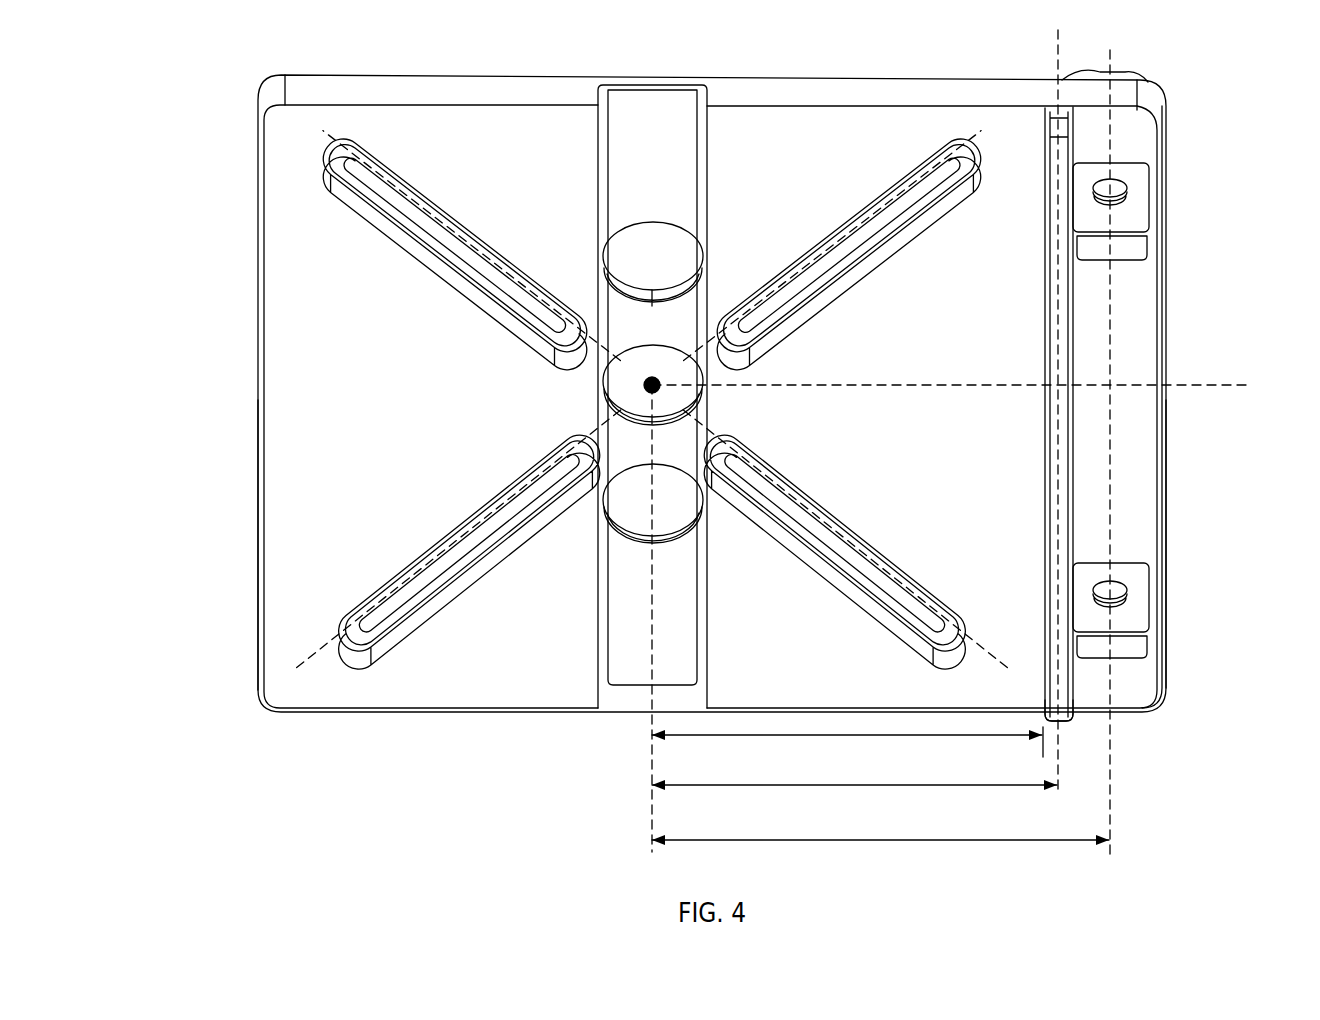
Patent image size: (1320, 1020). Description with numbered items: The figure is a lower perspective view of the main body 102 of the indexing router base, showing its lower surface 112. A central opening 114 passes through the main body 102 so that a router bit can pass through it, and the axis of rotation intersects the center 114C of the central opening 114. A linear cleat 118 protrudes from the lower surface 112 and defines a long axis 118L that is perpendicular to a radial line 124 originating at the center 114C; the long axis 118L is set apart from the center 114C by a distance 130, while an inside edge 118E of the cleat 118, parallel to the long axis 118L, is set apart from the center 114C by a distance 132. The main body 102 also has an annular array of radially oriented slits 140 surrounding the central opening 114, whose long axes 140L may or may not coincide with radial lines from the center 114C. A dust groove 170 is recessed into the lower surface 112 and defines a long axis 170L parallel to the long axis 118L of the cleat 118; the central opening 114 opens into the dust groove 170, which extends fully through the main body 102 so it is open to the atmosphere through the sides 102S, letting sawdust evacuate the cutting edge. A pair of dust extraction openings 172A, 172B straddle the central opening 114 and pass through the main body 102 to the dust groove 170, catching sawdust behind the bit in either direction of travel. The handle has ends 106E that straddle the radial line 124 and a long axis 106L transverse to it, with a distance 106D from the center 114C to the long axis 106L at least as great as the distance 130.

The main body 102 is at (280, 315).
The sides of the main body 102S is at (560, 88).
The distance from the center to the handle long axis 106D is at (890, 842).
The ends of the handle 106E is at (1190, 97).
The long axis of the handle 106L is at (1115, 540).
The lower surface 112 is at (558, 186).
The central opening 114 is at (622, 377).
The center of the central opening 114C is at (640, 392).
The cleat 118 is at (1048, 325).
The inside edge of the cleat 118E is at (1045, 560).
The long axis of the cleat 118L is at (1064, 47).
The radial line 124 is at (848, 385).
The distance between the center and the cleat long axis 130 is at (875, 787).
The distance between the center and the cleat inside edge 132 is at (730, 737).
The slits 140 is at (372, 173).
The long axes of the slits 140L is at (328, 132).
The dust groove 170 is at (638, 108).
The long axis of the dust groove 170L is at (650, 772).
The dust extraction opening 172A is at (678, 253).
The dust extraction opening 172B is at (675, 512).